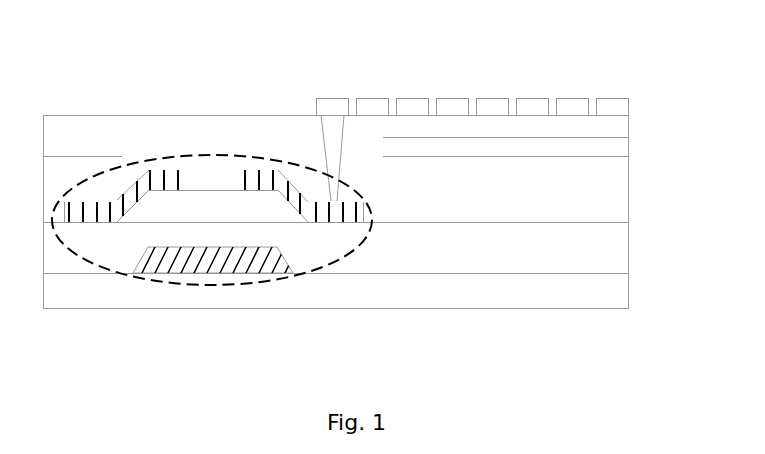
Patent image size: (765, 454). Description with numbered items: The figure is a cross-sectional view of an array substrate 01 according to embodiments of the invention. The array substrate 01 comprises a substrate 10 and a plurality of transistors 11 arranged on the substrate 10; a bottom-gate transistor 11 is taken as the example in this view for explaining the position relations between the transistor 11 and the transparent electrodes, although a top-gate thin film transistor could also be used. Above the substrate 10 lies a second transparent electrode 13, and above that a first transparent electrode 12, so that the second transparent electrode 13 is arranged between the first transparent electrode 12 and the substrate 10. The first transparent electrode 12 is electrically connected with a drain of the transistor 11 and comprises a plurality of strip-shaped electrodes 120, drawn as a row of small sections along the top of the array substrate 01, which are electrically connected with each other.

The array substrate 01 is at (292, 48).
The substrate 10 is at (620, 290).
The transistor 11 is at (268, 282).
The first transparent electrode 12 is at (491, 85).
The strip-shaped electrode 120 is at (506, 109).
The second transparent electrode 13 is at (618, 148).